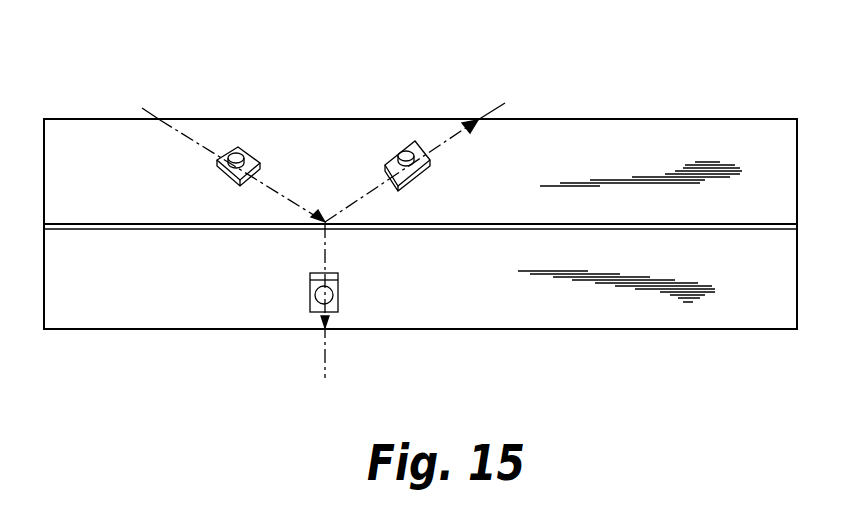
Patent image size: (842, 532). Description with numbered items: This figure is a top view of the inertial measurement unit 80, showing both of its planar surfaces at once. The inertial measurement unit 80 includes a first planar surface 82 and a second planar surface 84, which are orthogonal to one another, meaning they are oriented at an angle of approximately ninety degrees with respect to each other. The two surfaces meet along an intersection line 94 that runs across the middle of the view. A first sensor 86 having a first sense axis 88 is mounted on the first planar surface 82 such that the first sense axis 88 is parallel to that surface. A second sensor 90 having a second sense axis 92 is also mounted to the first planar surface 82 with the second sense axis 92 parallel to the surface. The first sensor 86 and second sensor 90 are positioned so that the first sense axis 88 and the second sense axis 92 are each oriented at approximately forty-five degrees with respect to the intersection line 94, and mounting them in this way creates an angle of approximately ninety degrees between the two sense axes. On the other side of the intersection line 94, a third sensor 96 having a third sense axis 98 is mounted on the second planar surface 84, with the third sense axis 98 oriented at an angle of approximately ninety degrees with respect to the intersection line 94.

The inertial measurement unit 80 is at (96, 50).
The first planar surface 82 is at (680, 137).
The second planar surface 84 is at (728, 313).
The first sensor 86 is at (228, 148).
The first sense axis 88 is at (182, 137).
The second sensor 90 is at (393, 148).
The second sense axis 92 is at (453, 138).
The intersection line 94 is at (496, 228).
The third sensor 96 is at (308, 296).
The third sense axis 98 is at (328, 265).